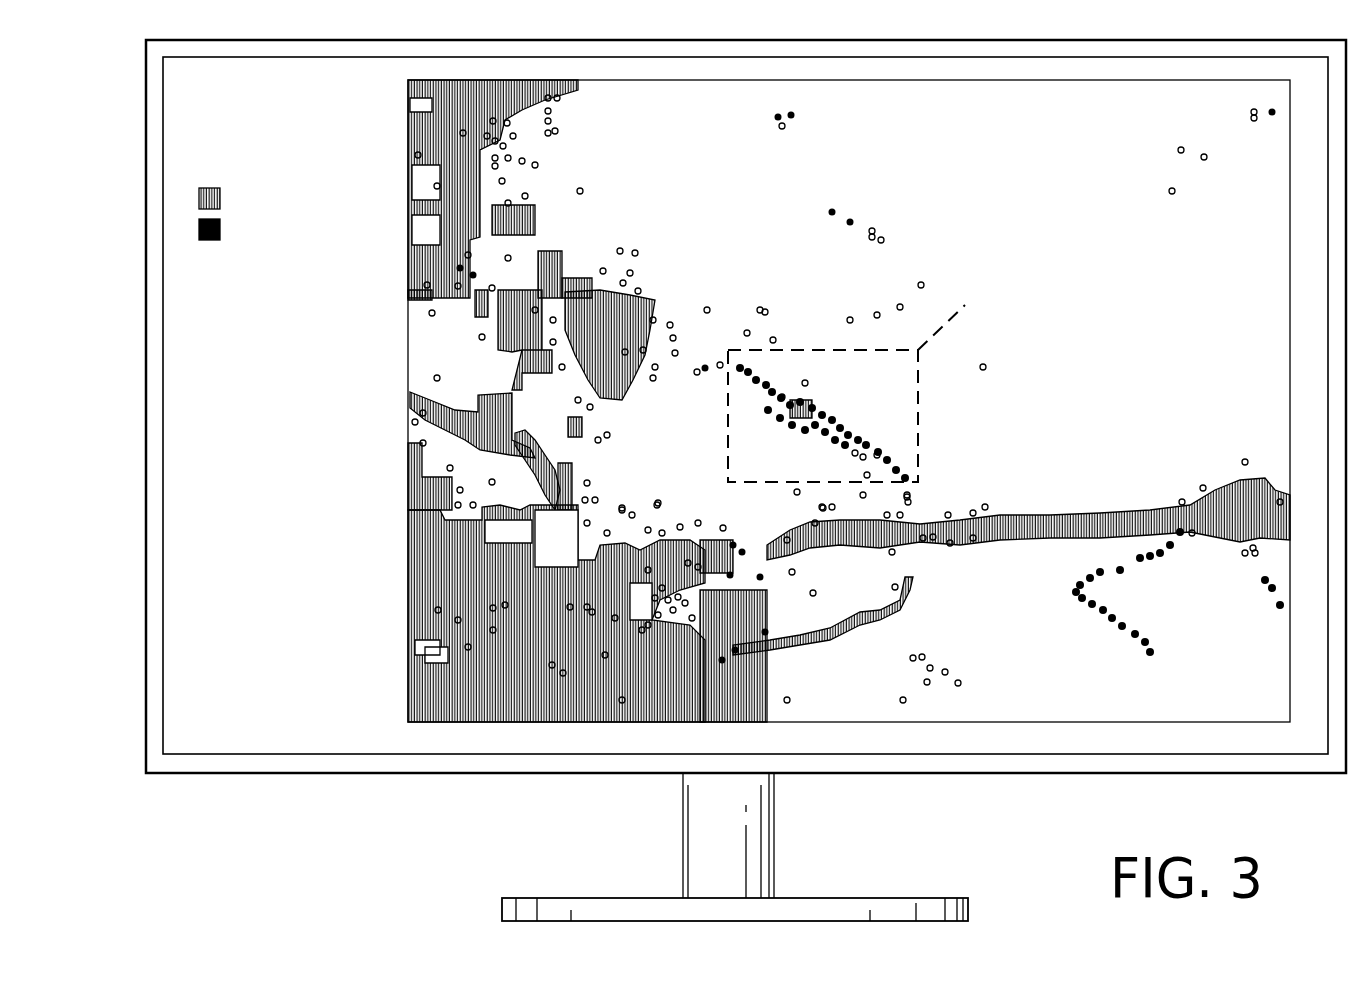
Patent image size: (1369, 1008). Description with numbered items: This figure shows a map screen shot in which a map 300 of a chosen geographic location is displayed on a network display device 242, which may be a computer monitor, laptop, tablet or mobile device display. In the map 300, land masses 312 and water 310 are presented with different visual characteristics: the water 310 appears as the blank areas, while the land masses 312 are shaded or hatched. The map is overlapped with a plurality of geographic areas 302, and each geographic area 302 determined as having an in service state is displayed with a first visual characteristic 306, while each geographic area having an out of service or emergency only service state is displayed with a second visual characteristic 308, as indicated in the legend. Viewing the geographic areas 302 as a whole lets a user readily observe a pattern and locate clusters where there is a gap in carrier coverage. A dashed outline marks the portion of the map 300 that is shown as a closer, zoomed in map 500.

The map 300 is at (106, 87).
The network display device 242 is at (748, 40).
The geographic area 302 is at (921, 285).
The first visual characteristic 306 is at (208, 186).
The second visual characteristic 308 is at (210, 241).
The water 310 is at (1158, 383).
The land masses 312 is at (408, 620).
The map 500 is at (893, 399).